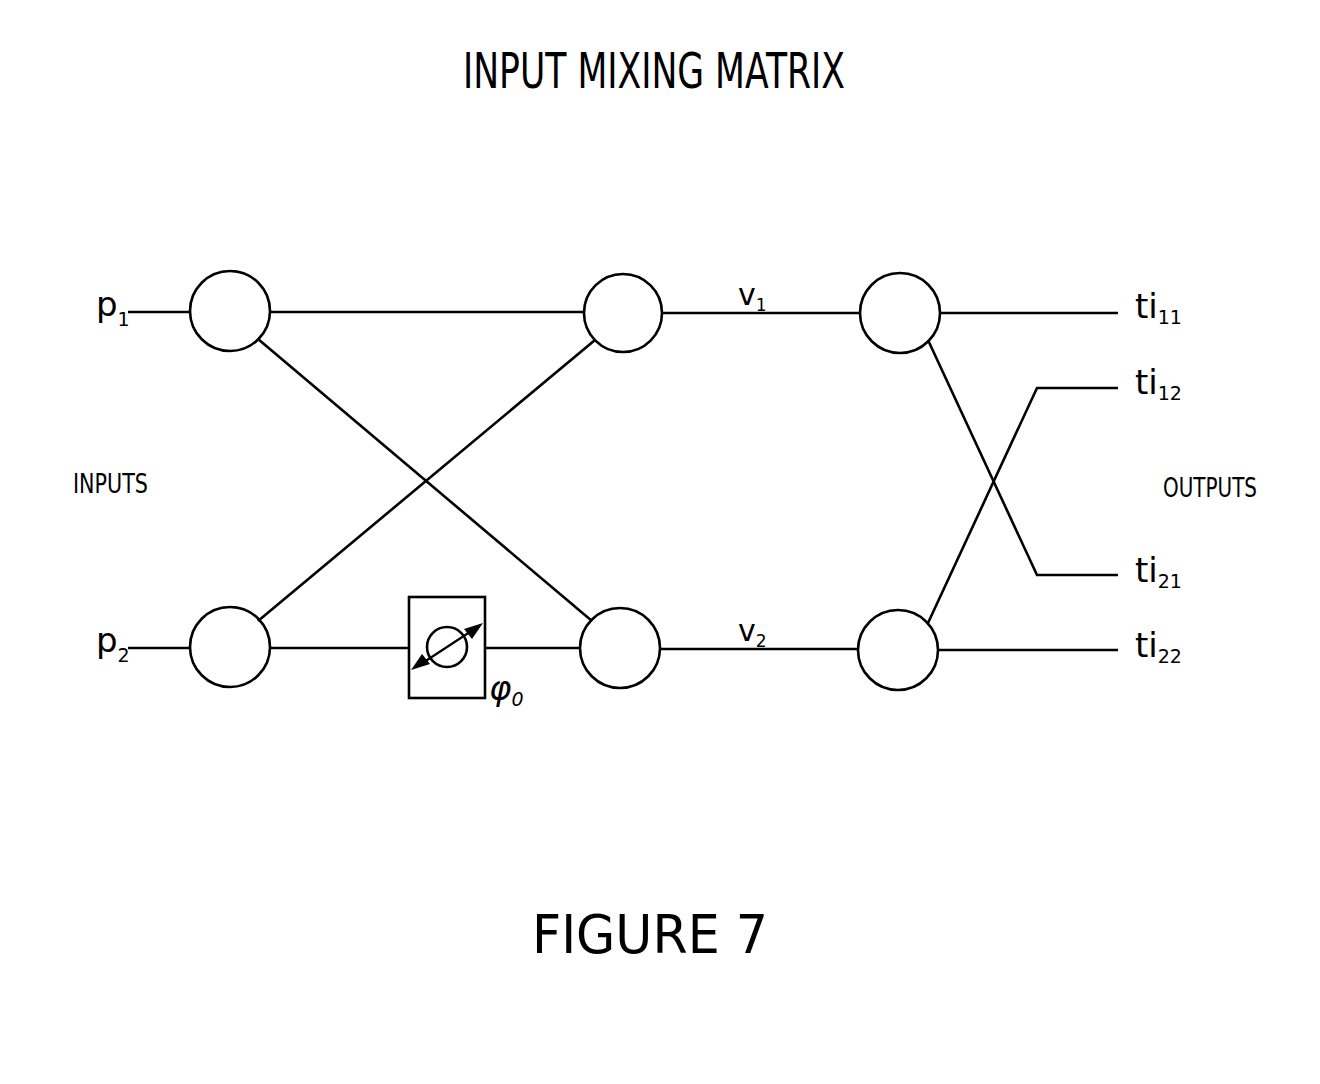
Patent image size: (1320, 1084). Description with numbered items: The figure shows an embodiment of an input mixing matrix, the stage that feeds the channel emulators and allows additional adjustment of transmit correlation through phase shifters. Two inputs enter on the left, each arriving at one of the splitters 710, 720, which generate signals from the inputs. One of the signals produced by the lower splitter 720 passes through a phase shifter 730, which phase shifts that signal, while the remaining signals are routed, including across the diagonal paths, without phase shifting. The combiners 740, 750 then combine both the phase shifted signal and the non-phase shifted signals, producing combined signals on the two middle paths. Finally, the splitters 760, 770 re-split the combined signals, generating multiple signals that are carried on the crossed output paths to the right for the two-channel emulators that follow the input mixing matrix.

The splitter 710 is at (241, 292).
The splitter 720 is at (231, 624).
The phase shifter 730 is at (431, 606).
The combiner 740 is at (622, 290).
The combiner 750 is at (620, 626).
The splitter 760 is at (903, 288).
The splitter 770 is at (897, 624).